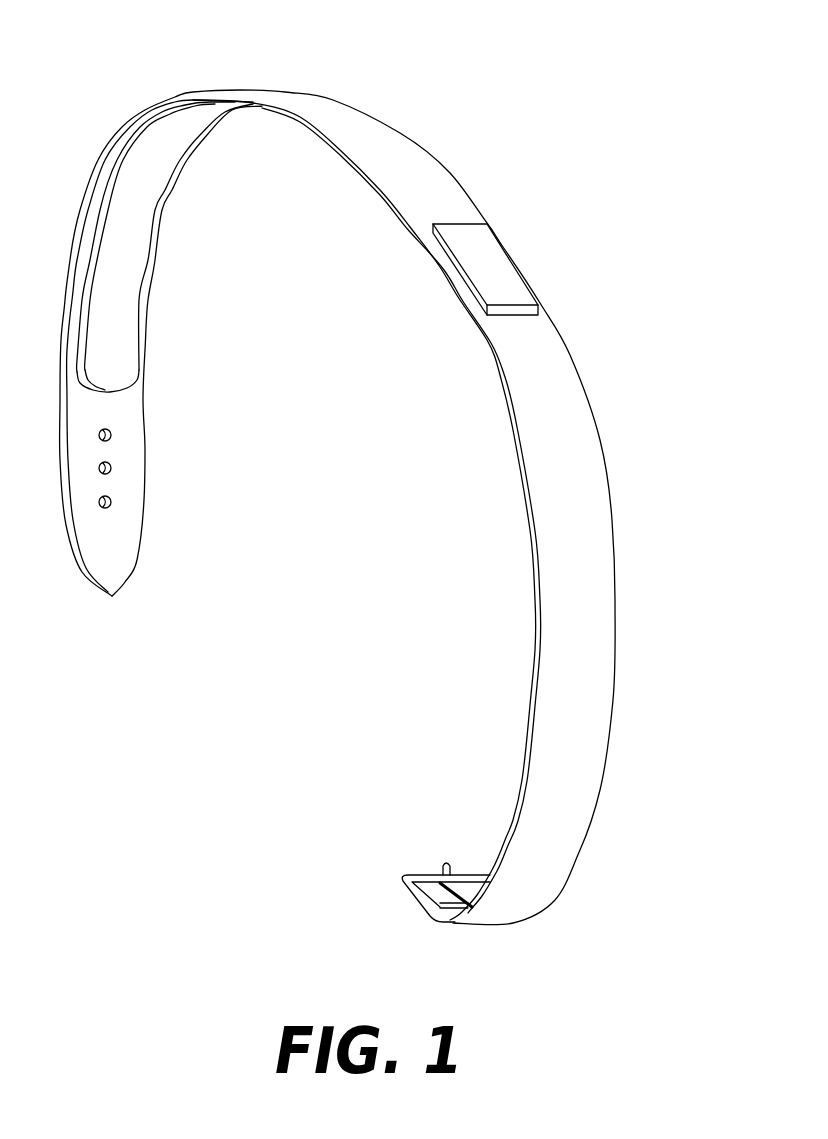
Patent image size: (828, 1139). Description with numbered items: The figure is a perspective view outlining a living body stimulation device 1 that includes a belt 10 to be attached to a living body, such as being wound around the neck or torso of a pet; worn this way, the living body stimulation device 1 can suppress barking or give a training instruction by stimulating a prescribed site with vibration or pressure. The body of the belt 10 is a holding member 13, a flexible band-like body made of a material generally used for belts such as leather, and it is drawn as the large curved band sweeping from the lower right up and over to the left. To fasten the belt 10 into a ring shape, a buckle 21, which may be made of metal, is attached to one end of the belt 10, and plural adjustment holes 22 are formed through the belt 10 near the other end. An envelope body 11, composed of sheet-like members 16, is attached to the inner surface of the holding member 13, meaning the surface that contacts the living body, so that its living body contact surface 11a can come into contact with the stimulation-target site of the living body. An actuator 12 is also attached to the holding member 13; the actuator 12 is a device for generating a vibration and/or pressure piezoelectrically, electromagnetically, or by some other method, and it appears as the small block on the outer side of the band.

The living body stimulation device 1 is at (499, 104).
The belt 10 is at (614, 563).
The envelope body 11 is at (144, 267).
The living body contact surface 11a is at (140, 203).
The actuator 12 is at (488, 250).
The holding member 13 is at (565, 417).
The sheet-like members 16 is at (122, 307).
The buckle 21 is at (415, 874).
The adjustment holes 22 is at (112, 502).